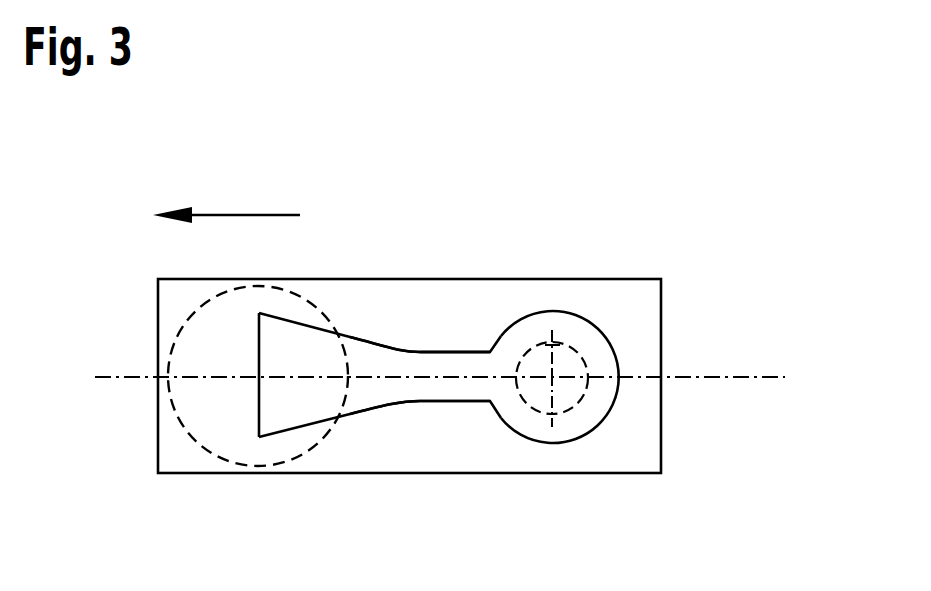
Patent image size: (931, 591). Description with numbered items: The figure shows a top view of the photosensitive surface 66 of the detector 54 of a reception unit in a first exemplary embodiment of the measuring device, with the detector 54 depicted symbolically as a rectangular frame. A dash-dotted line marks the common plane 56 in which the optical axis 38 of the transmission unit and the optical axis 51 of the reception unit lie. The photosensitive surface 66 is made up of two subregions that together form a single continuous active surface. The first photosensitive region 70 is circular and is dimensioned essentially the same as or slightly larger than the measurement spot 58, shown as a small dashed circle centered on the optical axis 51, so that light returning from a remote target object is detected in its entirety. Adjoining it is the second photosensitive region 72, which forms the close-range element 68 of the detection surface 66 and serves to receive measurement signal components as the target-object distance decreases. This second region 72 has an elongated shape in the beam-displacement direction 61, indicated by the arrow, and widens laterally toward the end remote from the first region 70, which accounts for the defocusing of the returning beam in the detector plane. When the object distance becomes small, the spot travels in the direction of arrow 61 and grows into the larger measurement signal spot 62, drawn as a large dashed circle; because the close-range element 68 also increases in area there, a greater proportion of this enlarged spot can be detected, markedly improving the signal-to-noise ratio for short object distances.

The optical axis of transmission unit 38 is at (774, 378).
The optical axis of reception unit 51 is at (562, 364).
The detector 54 is at (658, 298).
The common plane of optical axes 56 is at (118, 388).
The measurement spot 58 is at (551, 345).
The beam-displacement direction 61 is at (237, 215).
The measurement signal spot 62 is at (186, 343).
The photosensitive surface 66 is at (475, 322).
The close-range element 68 is at (423, 425).
The first photosensitive region 70 is at (572, 428).
The second photosensitive region 72 is at (294, 420).